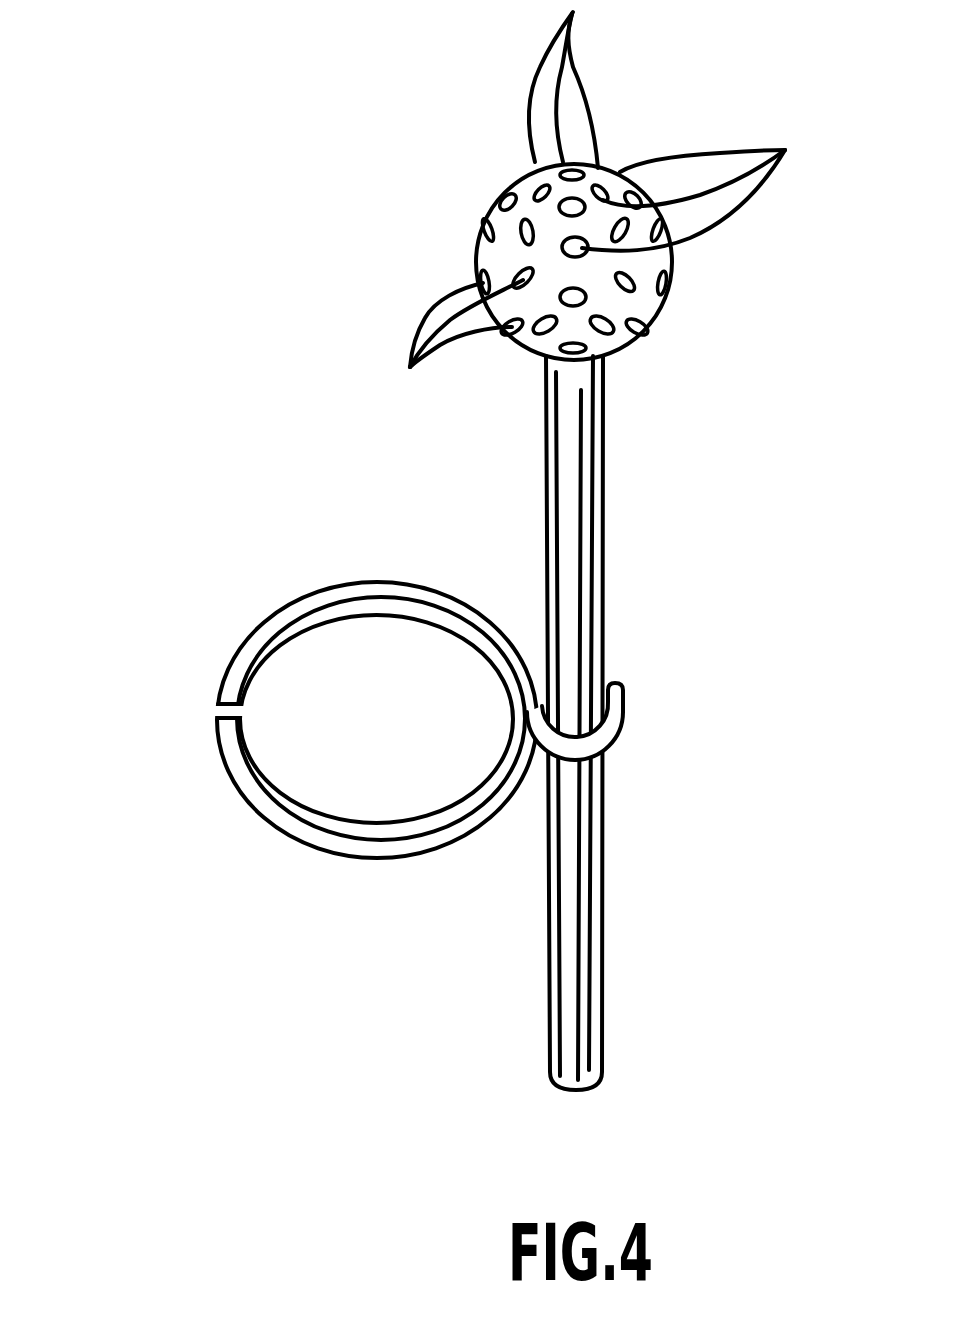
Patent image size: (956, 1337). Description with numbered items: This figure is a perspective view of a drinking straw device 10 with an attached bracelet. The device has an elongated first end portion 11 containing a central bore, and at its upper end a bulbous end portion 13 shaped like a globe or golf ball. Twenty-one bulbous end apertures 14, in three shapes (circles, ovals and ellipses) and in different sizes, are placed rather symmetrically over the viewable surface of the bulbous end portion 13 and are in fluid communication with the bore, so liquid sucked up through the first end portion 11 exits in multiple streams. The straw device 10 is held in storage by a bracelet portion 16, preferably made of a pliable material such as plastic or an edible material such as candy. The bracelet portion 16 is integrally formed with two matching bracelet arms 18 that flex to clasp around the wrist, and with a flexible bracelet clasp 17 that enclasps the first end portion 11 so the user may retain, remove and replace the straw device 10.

The drinking straw device 10 is at (478, 156).
The first end portion 11 is at (602, 907).
The bulbous end portion 13 is at (673, 283).
The bulbous end apertures 14 is at (590, 207).
The bracelet portion 16 is at (291, 548).
The bracelet clasp 17 is at (617, 733).
The bracelet arms 18 is at (262, 625).